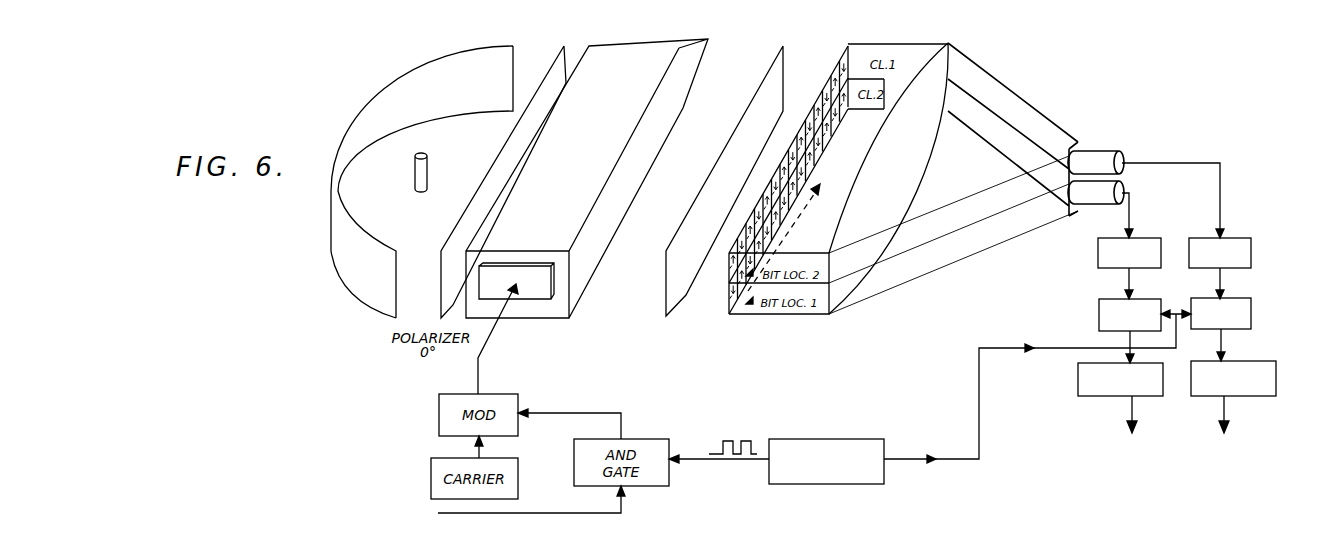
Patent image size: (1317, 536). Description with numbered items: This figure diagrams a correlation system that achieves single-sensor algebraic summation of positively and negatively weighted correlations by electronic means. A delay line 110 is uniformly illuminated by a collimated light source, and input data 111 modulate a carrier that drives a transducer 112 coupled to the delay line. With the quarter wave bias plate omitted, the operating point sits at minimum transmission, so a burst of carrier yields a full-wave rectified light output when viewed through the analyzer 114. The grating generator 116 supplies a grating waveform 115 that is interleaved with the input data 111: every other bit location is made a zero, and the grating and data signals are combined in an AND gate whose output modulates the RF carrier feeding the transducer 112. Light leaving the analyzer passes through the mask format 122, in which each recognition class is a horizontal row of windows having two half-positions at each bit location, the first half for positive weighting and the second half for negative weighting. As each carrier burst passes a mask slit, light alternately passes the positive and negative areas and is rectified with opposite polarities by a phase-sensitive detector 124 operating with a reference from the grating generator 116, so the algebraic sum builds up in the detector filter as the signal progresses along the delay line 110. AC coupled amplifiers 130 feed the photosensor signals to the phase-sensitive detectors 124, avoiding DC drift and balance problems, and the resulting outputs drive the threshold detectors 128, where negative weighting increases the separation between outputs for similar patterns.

The delay line 110 is at (578, 57).
The input data 111 is at (321, 508).
The transducer 112 is at (523, 296).
The analyzer 114 is at (767, 68).
The grating waveform 115 is at (722, 437).
The grating generator 116 is at (832, 438).
The mask format 122 is at (832, 70).
The phase-sensitive detector 124 is at (1098, 300).
The threshold detector 128 is at (1077, 374).
The AC coupled amplifier 130 is at (1097, 244).